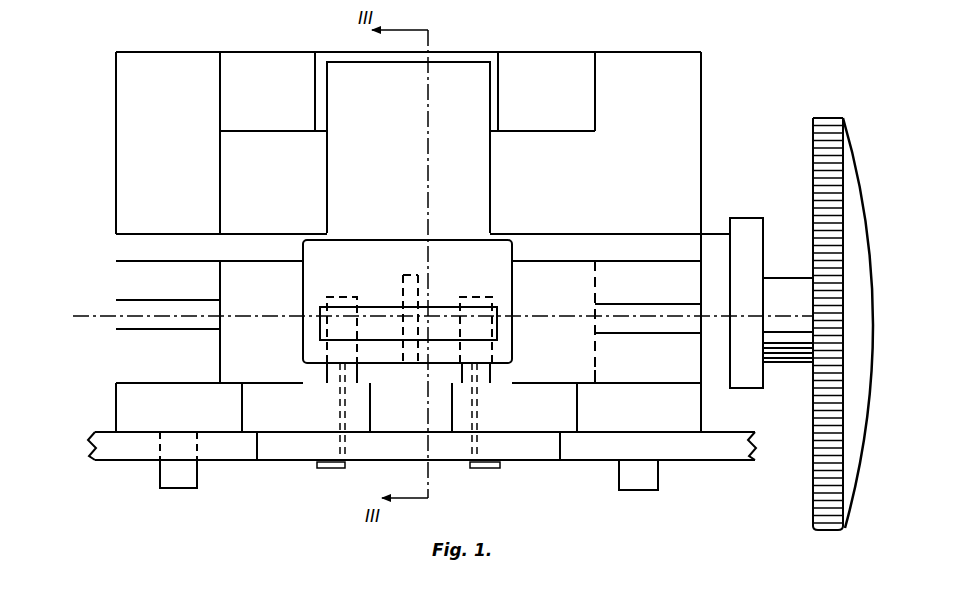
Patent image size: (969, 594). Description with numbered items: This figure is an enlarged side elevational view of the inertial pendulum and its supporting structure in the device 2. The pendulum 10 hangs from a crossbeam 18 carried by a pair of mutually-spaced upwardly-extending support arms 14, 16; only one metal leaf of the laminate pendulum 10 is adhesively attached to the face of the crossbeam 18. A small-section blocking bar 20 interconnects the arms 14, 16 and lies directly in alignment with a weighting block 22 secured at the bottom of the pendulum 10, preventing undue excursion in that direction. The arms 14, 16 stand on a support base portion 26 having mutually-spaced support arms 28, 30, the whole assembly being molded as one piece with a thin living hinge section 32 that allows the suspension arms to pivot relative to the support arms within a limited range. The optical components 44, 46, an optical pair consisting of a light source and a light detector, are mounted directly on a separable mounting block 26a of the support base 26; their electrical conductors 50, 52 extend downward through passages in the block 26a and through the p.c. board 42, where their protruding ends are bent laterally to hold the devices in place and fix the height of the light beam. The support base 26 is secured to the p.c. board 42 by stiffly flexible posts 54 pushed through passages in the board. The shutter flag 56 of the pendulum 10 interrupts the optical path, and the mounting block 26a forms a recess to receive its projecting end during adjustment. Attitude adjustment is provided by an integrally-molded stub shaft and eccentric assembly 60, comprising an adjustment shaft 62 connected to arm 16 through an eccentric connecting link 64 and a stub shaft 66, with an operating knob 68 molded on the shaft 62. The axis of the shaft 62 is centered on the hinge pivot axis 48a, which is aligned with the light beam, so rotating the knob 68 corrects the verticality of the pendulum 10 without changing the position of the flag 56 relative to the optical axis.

The apparatus 2 is at (656, 42).
The pendulum 10 is at (396, 149).
The support arm 14 is at (175, 173).
The support arm 16 is at (659, 168).
The crossbeam 18 is at (270, 64).
The blocking bar 20 is at (264, 245).
The weighting block 22 is at (300, 285).
The support base portion 26 is at (125, 410).
The mounting block 26a is at (284, 432).
The support arm 28 is at (178, 365).
The support arm 30 is at (661, 360).
The living hinge section 32 is at (175, 316).
The p.c. board 42 is at (137, 452).
The optical component 44 is at (328, 377).
The optical component 46 is at (490, 377).
The hinge pivot axis 48a is at (93, 310).
The electrical conductor 50 is at (340, 418).
The electrical conductor 52 is at (480, 420).
The post 54 is at (185, 478).
The shutter flag 56 is at (406, 272).
The stub shaft and eccentric assembly 60 is at (752, 212).
The adjustment shaft 62 is at (785, 278).
The eccentric connecting link 64 is at (742, 378).
The stub shaft 66 is at (718, 235).
The operating knob 68 is at (458, 53).